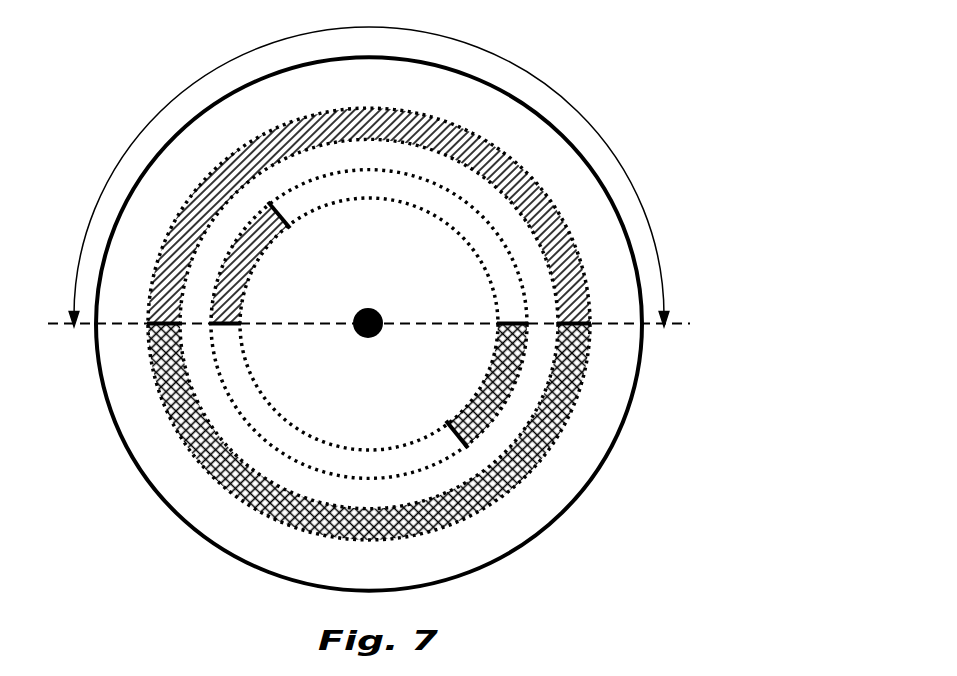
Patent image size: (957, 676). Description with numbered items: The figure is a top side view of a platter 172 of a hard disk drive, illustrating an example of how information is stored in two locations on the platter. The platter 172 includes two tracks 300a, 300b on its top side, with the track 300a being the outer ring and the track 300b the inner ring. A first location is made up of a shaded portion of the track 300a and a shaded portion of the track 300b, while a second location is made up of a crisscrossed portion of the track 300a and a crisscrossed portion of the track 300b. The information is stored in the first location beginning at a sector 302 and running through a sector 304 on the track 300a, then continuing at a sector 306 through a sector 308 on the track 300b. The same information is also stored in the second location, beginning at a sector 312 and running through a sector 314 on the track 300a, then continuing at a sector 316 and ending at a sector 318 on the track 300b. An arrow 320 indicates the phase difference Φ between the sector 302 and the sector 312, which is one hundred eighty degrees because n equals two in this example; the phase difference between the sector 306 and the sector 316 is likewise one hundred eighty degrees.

The platter 172 is at (607, 100).
The arrow 320 is at (622, 167).
The track 300a is at (232, 497).
The track 300b is at (275, 411).
The sector 302 is at (148, 322).
The sector 304 is at (589, 320).
The sector 306 is at (236, 309).
The sector 308 is at (282, 209).
The sector 312 is at (587, 346).
The sector 314 is at (147, 347).
The sector 316 is at (512, 322).
The sector 318 is at (446, 443).